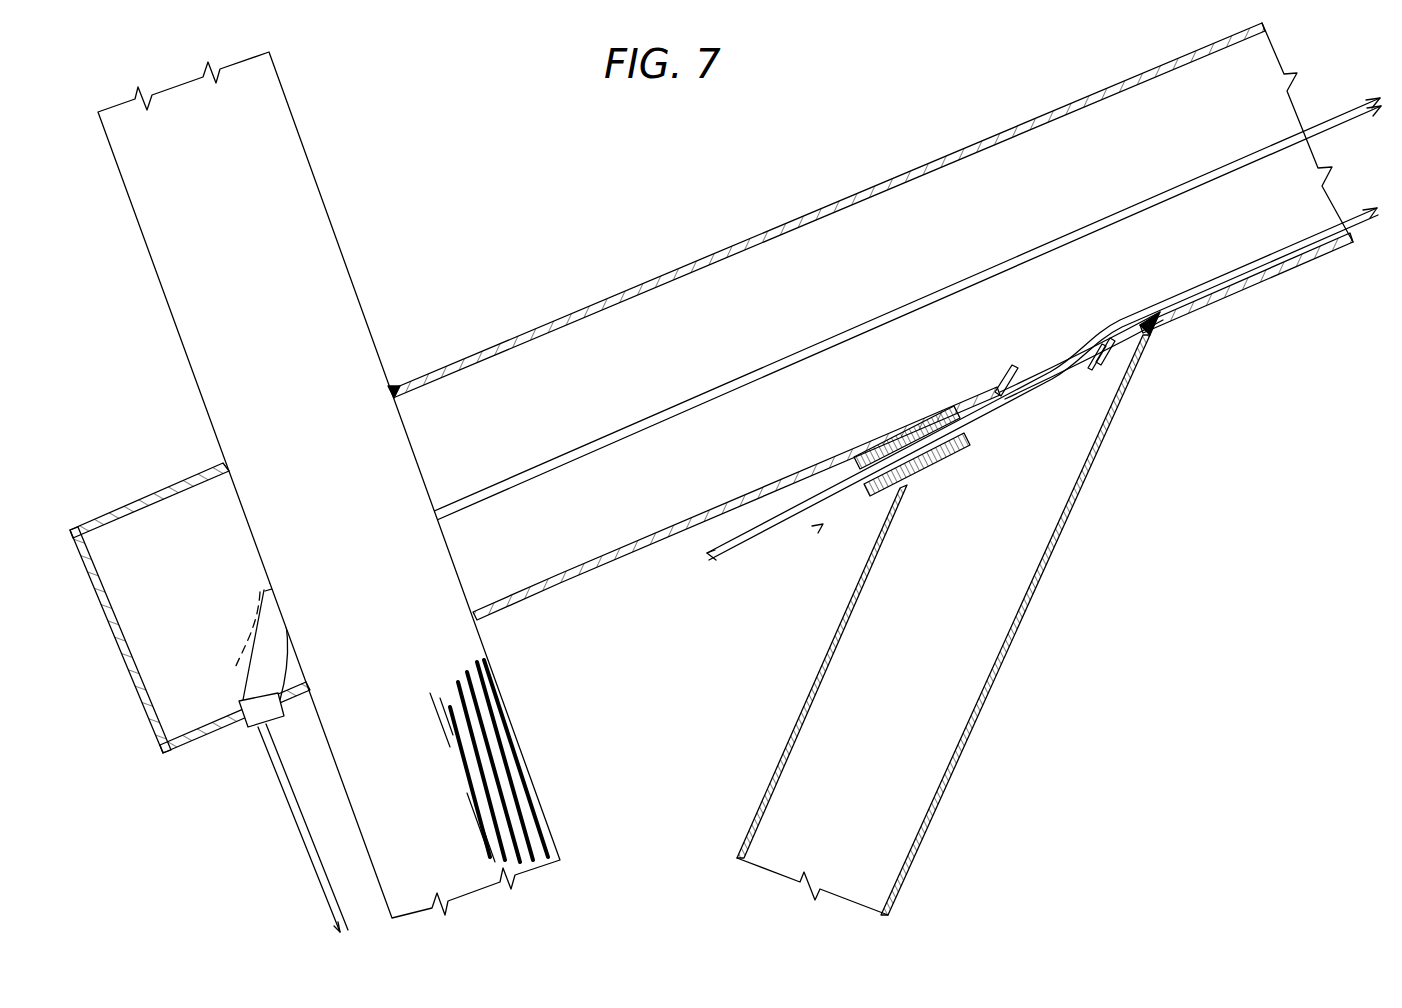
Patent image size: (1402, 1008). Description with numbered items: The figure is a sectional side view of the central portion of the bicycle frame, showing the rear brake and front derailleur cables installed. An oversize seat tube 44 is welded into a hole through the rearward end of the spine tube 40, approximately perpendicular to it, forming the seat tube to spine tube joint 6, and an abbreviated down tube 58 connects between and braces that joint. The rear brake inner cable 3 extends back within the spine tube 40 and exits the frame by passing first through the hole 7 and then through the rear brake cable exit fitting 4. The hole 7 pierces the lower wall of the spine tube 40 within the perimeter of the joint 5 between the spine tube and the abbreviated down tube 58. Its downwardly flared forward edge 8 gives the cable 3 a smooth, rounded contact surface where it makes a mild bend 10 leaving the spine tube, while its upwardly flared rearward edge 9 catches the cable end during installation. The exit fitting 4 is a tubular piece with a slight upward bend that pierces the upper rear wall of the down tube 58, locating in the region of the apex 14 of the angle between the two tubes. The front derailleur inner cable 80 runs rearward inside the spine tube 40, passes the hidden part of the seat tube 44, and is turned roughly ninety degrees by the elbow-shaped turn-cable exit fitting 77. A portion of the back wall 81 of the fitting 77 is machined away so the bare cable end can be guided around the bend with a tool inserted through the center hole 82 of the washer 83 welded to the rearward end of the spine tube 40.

The rear brake inner cable 3 is at (733, 553).
The rear brake cable exit fitting 4 is at (937, 447).
The joint between the spine tube and the abbreviated down tube 5 is at (1153, 338).
The seat tube to spine tube joint 6 is at (395, 390).
The hole 7 is at (1040, 362).
The downwardly flared forward edge 8 is at (1097, 362).
The upwardly flared rearward edge 9 is at (1010, 367).
The mild bend 10 is at (1112, 328).
The apex of the angle between the spine tube and the abbreviated down tube 14 is at (823, 525).
The spine tube 40 is at (655, 279).
The seat tube 44 is at (400, 232).
The abbreviated down tube 58 is at (977, 713).
The turn-cable exit fitting 77 is at (250, 675).
The front derailleur inner cable 80 is at (298, 828).
The back wall of the turn-cable exit fitting 81 is at (241, 638).
The center hole 82 is at (108, 642).
The washer 83 is at (158, 737).